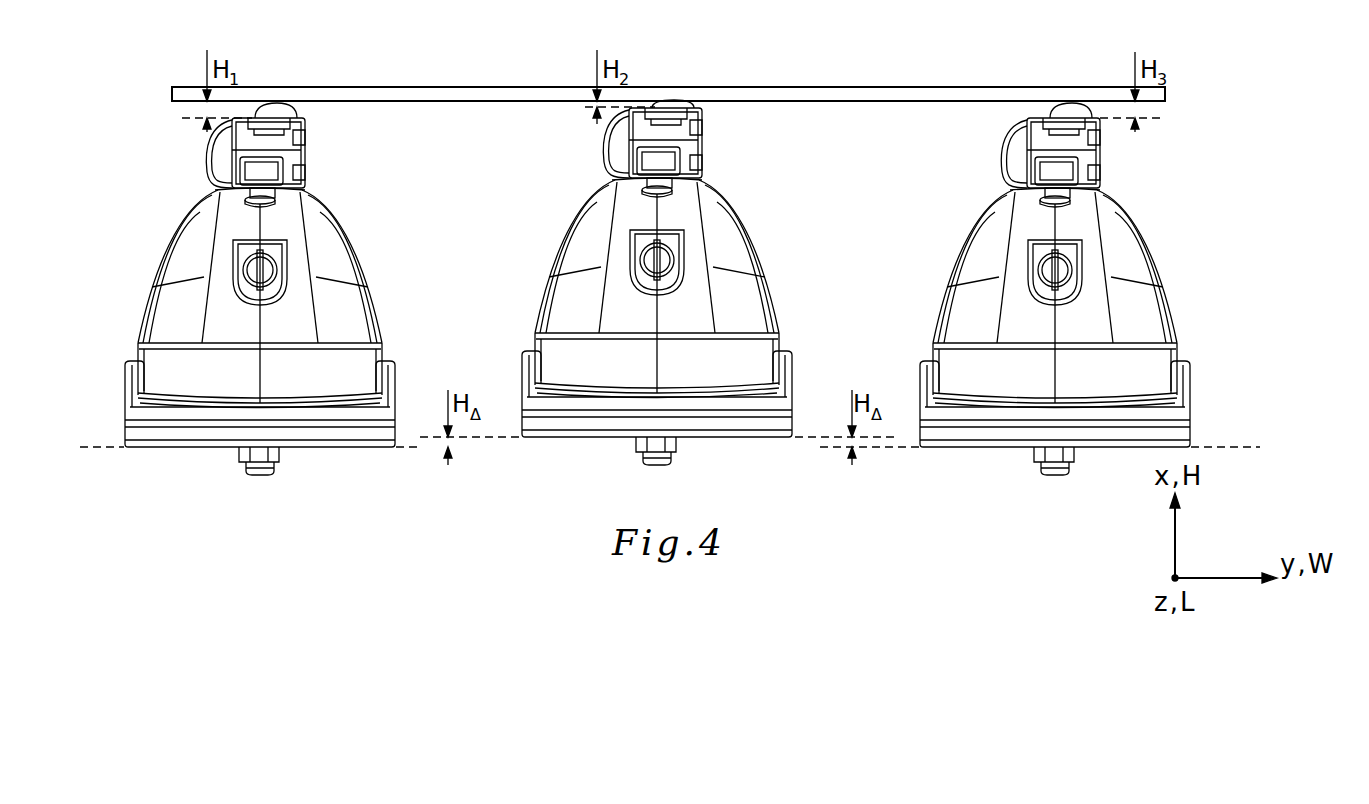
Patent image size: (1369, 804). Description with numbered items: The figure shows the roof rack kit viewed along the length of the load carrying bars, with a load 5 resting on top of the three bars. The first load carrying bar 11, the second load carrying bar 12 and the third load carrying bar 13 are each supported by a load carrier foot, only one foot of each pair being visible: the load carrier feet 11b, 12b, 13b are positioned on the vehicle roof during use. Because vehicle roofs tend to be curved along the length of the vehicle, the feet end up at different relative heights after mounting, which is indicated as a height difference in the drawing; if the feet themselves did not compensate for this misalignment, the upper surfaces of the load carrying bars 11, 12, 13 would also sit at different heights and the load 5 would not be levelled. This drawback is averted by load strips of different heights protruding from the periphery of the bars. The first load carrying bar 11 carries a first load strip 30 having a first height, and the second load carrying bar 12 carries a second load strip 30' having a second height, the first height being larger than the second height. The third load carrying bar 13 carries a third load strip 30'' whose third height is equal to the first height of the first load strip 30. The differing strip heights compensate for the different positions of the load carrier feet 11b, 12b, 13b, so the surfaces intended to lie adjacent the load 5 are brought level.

The load 5 is at (400, 87).
The first load carrying bar 11 is at (208, 152).
The load carrier foot of the first load carrying bar 11b is at (155, 305).
The second load carrying bar 12 is at (605, 143).
The load carrier foot of the second load carrying bar 12b is at (553, 295).
The third load carrying bar 13 is at (1003, 148).
The load carrier foot of the third load carrying bar 13b is at (952, 302).
The first load strip 30 is at (268, 118).
The second load strip 30' is at (665, 113).
The third load strip 30'' is at (1063, 113).